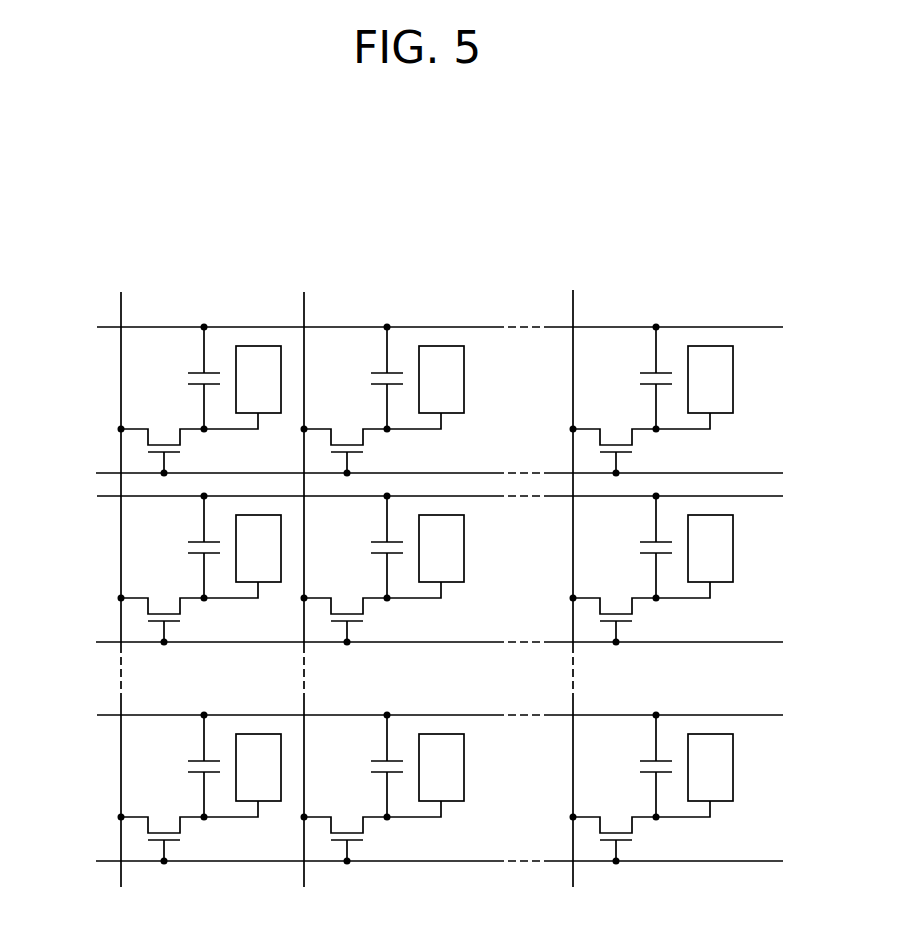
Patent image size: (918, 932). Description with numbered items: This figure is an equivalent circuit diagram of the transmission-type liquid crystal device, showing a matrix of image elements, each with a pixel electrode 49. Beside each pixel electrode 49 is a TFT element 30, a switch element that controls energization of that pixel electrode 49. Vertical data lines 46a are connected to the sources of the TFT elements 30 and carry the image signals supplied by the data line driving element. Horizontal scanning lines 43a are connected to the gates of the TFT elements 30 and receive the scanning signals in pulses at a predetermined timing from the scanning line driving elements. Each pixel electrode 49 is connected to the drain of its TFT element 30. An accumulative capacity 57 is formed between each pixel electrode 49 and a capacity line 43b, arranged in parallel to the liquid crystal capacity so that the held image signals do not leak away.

The scanning line 43a is at (108, 472).
The capacity line 43b is at (106, 326).
The data line 46a is at (123, 309).
The pixel electrode 49 is at (266, 414).
The accumulative capacity 57 is at (178, 375).
The TFT element 30 is at (194, 447).